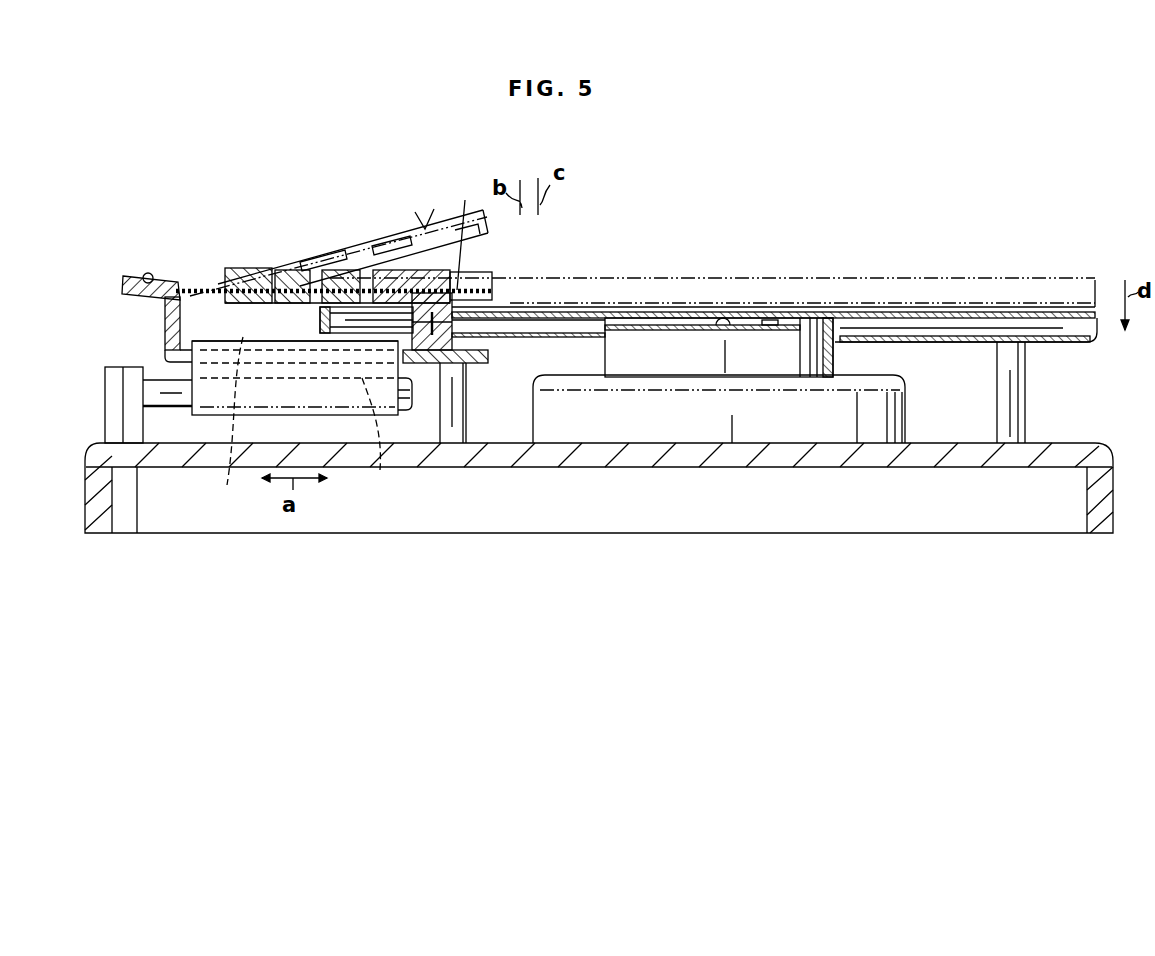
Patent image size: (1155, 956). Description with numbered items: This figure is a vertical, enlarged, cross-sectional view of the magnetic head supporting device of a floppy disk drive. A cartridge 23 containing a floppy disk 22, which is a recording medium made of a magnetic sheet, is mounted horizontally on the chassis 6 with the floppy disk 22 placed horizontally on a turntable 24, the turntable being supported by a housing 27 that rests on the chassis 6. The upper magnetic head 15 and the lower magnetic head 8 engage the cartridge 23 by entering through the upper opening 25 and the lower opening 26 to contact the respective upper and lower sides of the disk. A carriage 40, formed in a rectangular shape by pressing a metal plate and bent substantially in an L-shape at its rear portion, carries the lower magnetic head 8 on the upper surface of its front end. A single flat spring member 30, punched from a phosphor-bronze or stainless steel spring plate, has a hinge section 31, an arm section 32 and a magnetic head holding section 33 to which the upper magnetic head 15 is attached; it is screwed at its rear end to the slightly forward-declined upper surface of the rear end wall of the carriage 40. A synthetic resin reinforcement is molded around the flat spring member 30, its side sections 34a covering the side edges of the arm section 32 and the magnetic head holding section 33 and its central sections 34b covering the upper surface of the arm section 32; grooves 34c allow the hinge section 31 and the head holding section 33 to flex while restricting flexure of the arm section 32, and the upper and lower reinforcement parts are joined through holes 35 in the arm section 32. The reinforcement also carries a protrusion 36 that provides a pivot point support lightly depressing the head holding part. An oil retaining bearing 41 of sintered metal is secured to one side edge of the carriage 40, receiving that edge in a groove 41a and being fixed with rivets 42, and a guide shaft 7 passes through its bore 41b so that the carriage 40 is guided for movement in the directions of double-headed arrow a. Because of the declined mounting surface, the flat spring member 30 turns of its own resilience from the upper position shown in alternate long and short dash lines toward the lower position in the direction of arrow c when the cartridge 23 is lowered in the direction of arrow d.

The chassis 6 is at (592, 467).
The guide shaft 7 is at (163, 383).
The lower magnetic head 8 is at (428, 356).
The upper magnetic head 15 is at (466, 235).
The floppy disk 22 is at (600, 318).
The cartridge 23 is at (738, 310).
The turntable 24 is at (808, 348).
The upper opening 25 is at (570, 315).
The lower opening 26 is at (572, 337).
The housing block 27 is at (757, 422).
The flat spring member 30 is at (204, 280).
The hinge section 31 is at (168, 288).
The arm section 32 is at (280, 288).
The magnetic head holding section 33 is at (495, 296).
The side sections 34a is at (470, 262).
The central sections 34b is at (252, 285).
The grooves 34c is at (495, 283).
The holes 35 is at (250, 290).
The protrusion 36 is at (427, 226).
The carriage 40 is at (484, 362).
The oil retaining bearing 41 is at (338, 395).
The groove 41a is at (243, 348).
The bore 41b is at (235, 470).
The rivets 42 is at (212, 410).